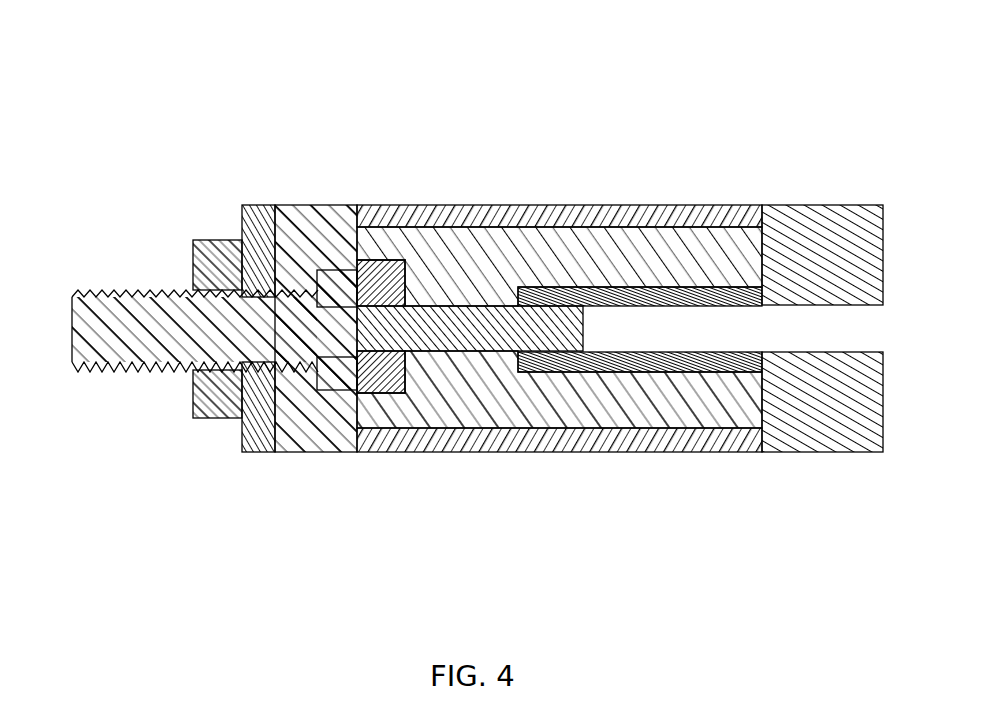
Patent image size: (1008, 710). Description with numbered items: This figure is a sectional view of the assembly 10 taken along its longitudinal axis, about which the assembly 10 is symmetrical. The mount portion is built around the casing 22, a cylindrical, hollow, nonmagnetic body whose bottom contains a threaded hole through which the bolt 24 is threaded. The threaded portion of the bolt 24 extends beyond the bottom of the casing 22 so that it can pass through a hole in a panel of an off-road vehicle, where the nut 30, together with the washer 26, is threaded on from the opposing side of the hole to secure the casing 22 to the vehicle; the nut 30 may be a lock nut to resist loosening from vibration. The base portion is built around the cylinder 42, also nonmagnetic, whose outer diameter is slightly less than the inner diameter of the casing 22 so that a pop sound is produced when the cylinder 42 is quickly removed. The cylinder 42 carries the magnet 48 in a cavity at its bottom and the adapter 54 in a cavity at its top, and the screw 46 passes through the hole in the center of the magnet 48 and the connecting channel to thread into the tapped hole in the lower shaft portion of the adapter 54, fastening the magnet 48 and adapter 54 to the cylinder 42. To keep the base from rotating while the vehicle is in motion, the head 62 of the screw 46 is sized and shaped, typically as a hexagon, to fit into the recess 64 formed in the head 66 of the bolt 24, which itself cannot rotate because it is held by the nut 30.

The assembly 10 is at (121, 129).
The casing 22 is at (686, 440).
The bolt 24 is at (145, 364).
The washer 26 is at (263, 450).
The nut 30 is at (217, 263).
The cylinder 42 is at (634, 230).
The screw 46 is at (447, 333).
The magnet 48 is at (383, 205).
The adapter 54 is at (828, 440).
The head of the screw 62 is at (347, 352).
The recess 64 is at (342, 223).
The head of the bolt 66 is at (328, 388).